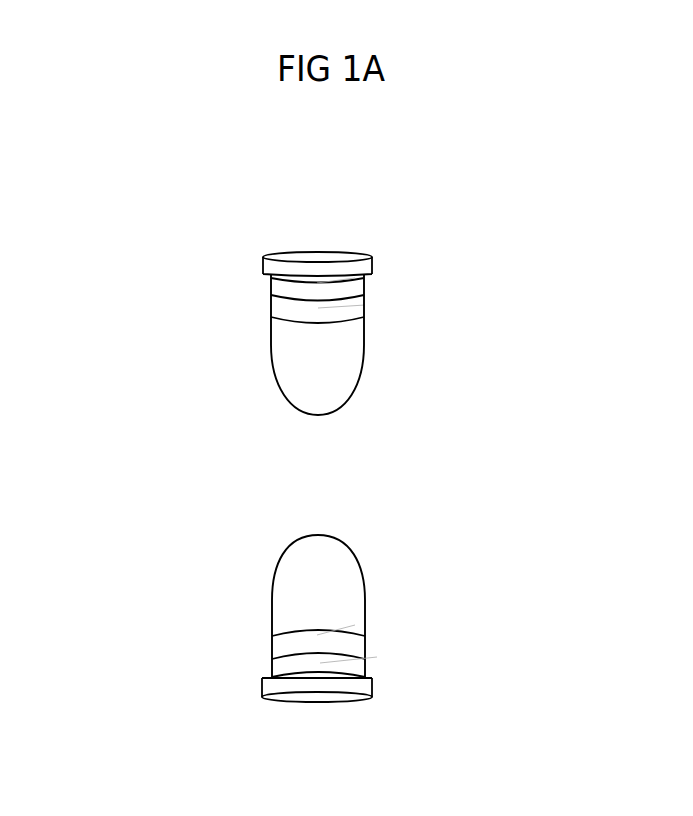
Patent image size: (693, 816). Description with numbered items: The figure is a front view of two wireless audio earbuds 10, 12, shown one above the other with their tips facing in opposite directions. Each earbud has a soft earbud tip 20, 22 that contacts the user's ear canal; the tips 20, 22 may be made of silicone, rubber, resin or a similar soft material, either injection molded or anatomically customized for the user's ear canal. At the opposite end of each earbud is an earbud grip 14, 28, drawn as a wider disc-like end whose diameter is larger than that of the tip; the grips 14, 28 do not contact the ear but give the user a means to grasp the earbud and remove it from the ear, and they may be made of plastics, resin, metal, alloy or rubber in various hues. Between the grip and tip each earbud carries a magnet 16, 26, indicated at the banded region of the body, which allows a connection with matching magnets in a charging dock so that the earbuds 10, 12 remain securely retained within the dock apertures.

The earbud 10 is at (240, 316).
The earbud 12 is at (240, 638).
The earbud grip 14 is at (330, 252).
The magnet 16 is at (382, 267).
The earbud tip 20 is at (322, 368).
The earbud tip 22 is at (320, 570).
The magnet 26 is at (370, 657).
The earbud grip 28 is at (322, 683).